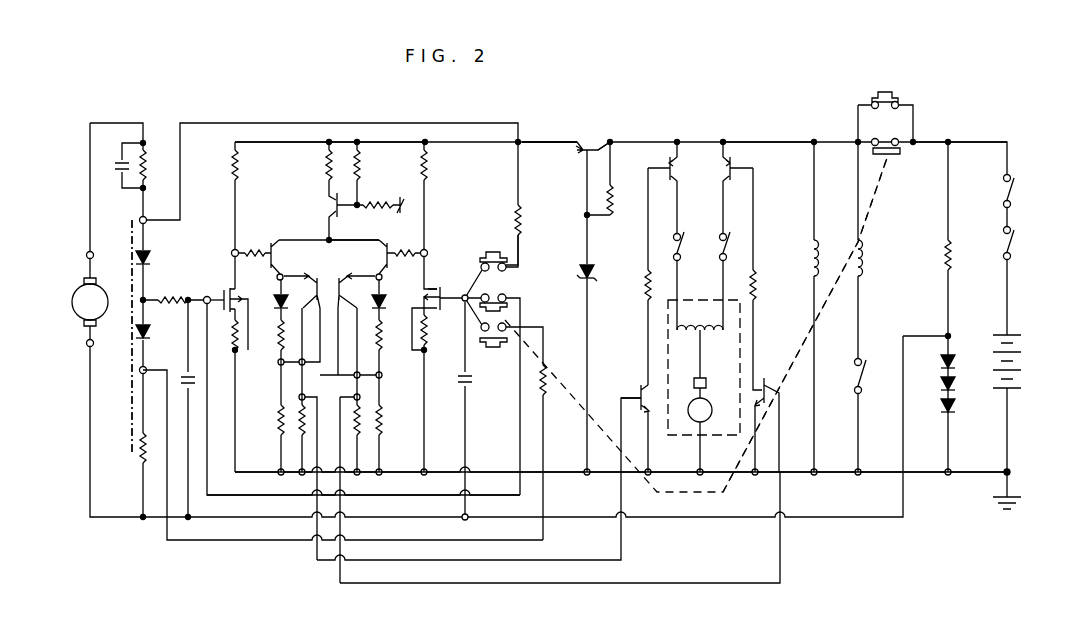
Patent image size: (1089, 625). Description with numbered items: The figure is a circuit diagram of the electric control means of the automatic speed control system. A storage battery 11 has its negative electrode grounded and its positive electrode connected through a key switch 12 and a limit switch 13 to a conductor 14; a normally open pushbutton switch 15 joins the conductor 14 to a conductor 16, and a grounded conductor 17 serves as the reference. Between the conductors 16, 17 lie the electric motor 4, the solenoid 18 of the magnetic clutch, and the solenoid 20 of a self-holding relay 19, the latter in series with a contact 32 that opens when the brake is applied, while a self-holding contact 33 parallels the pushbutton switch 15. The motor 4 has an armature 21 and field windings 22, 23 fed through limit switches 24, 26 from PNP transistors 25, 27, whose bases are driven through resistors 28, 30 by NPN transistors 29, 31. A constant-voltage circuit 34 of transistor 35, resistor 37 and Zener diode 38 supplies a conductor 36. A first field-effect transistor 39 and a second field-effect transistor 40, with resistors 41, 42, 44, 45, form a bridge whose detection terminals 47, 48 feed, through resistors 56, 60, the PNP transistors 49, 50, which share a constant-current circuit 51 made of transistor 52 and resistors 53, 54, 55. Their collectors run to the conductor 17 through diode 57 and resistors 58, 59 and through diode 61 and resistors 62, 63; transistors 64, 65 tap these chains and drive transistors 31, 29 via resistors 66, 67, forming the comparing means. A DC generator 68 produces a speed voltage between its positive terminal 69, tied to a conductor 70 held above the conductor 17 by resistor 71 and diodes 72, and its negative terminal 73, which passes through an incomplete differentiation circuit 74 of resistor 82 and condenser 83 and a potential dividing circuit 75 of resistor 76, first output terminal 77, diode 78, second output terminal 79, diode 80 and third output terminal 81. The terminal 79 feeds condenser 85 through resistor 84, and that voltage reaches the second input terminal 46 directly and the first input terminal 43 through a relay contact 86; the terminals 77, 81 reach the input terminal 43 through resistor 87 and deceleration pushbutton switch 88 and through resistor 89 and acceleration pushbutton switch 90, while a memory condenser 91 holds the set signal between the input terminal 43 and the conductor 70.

The electric motor 4 is at (697, 300).
The storage battery 11 is at (1018, 342).
The key switch 12 is at (1014, 242).
The limit switch 13 is at (1014, 190).
The conductor 14 is at (970, 142).
The pushbutton switch 15 is at (868, 96).
The conductor 16 is at (776, 140).
The conductor 17 is at (802, 474).
The solenoid 18 is at (820, 248).
The self-holding relay 19 is at (810, 323).
The solenoid 20 is at (862, 244).
The armature 21 is at (688, 400).
The field winding 22 is at (682, 340).
The field winding 23 is at (704, 392).
The limit switch 24 is at (680, 254).
The PNP-type transistor 25 is at (666, 162).
The limit switch 26 is at (720, 234).
The PNP-type transistor 27 is at (740, 160).
The resistor 28 is at (647, 256).
The NPN-type transistor 29 is at (636, 396).
The resistor 30 is at (754, 274).
The NPN-type transistor 31 is at (766, 380).
The contact 32 is at (864, 374).
The self-holding contact 33 is at (904, 160).
The constant-voltage circuit 34 is at (598, 140).
The NPN-type transistor 35 is at (606, 142).
The conductor 36 is at (552, 142).
The resistor 37 is at (626, 200).
The Zener diode 38 is at (592, 276).
The first field-effect transistor 39 is at (448, 292).
The second field-effect transistor 40 is at (208, 295).
The resistor 41 is at (424, 164).
The resistor 42 is at (427, 340).
The first input terminal 43 is at (448, 306).
The resistor 44 is at (238, 164).
The resistor 45 is at (238, 332).
The second input terminal 46 is at (222, 292).
The detection terminal 47 is at (428, 252).
The detection terminal 48 is at (232, 254).
The PNP-type transistor 49 is at (376, 244).
The PNP-type transistor 50 is at (274, 278).
The constant-current circuit 51 is at (344, 142).
The PNP-type transistor 52 is at (332, 208).
The resistor 53 is at (329, 162).
The resistor 54 is at (358, 160).
The resistor 55 is at (376, 205).
The resistor 56 is at (406, 253).
The diode 57 is at (383, 294).
The resistor 58 is at (382, 334).
The resistor 59 is at (382, 426).
The resistor 60 is at (254, 254).
The diode 61 is at (272, 294).
The resistor 62 is at (280, 362).
The resistor 63 is at (278, 402).
The PNP-type transistor 64 is at (382, 276).
The PNP-type transistor 65 is at (332, 280).
The resistor 66 is at (372, 428).
The resistor 67 is at (290, 426).
The DC generator 68 is at (72, 302).
The positive output terminal 69 is at (86, 343).
The conductor 70 is at (562, 517).
The resistor 71 is at (950, 258).
The diodes 72 is at (958, 360).
The negative terminal 73 is at (87, 255).
The incomplete differentiation circuit 74 is at (128, 140).
The potential dividing circuit 75 is at (132, 376).
The resistor 76 is at (140, 454).
The first output terminal 77 is at (130, 392).
The diode 78 is at (148, 370).
The second output terminal 79 is at (154, 298).
The diode 80 is at (152, 254).
The third output terminal 81 is at (146, 216).
The resistor 82 is at (147, 150).
The condenser 83 is at (120, 174).
The resistor 84 is at (150, 324).
The condenser 85 is at (188, 368).
The relay contact 86 is at (508, 288).
The resistor 87 is at (546, 396).
The pushbutton switch 88 is at (480, 347).
The resistor 89 is at (522, 228).
The pushbutton switch 90 is at (490, 250).
The condenser 91 is at (456, 376).